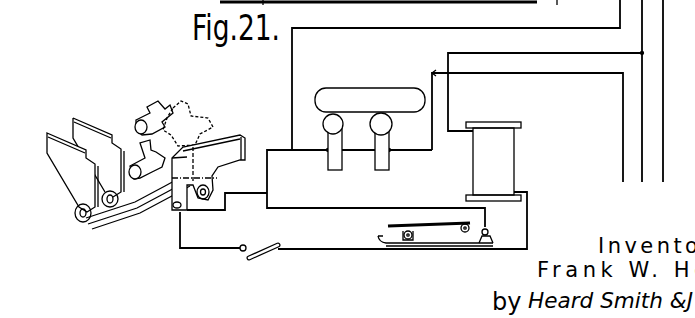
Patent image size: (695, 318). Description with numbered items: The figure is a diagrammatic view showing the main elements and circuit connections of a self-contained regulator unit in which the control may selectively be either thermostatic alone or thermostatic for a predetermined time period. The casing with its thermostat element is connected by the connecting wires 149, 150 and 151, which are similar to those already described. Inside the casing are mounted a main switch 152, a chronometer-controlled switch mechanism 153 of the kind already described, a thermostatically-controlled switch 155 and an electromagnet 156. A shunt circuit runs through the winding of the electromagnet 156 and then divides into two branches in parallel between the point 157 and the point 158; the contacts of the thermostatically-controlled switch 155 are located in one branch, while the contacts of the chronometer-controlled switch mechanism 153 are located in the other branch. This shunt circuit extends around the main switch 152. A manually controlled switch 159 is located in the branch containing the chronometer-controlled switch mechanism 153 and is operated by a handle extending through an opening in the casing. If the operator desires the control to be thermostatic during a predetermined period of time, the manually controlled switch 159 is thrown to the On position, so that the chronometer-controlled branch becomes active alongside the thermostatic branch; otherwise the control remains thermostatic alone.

The connecting wire 149 is at (565, 29).
The connecting wire 150 is at (565, 53).
The connecting wire 151 is at (603, 78).
The main switch 152 is at (364, 97).
The chronometer-controlled switch mechanism 153 is at (98, 222).
The thermostatically-controlled switch 155 is at (432, 246).
The electromagnet 156 is at (500, 157).
The point 157 is at (524, 233).
The point 158 is at (267, 193).
The manually controlled switch 159 is at (256, 257).